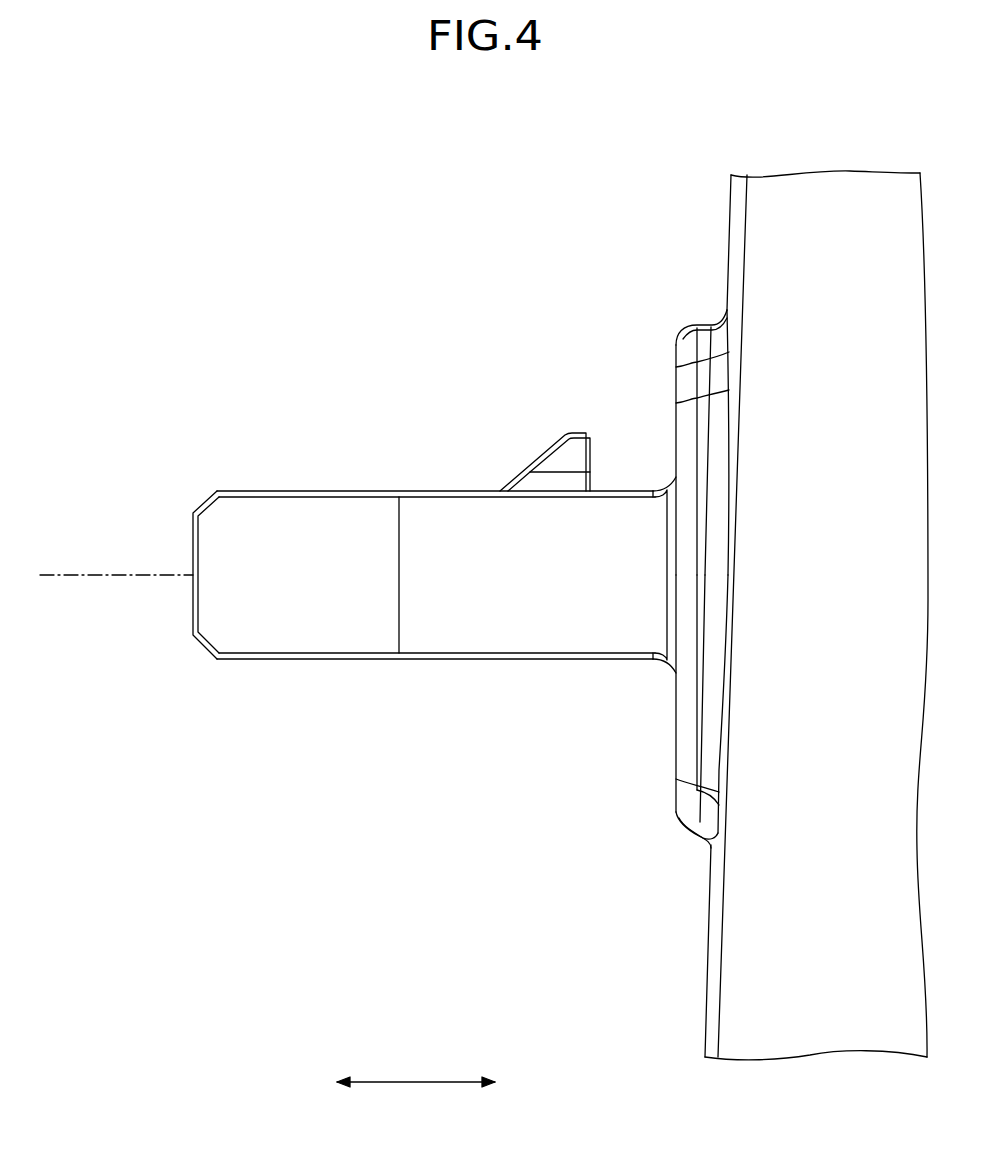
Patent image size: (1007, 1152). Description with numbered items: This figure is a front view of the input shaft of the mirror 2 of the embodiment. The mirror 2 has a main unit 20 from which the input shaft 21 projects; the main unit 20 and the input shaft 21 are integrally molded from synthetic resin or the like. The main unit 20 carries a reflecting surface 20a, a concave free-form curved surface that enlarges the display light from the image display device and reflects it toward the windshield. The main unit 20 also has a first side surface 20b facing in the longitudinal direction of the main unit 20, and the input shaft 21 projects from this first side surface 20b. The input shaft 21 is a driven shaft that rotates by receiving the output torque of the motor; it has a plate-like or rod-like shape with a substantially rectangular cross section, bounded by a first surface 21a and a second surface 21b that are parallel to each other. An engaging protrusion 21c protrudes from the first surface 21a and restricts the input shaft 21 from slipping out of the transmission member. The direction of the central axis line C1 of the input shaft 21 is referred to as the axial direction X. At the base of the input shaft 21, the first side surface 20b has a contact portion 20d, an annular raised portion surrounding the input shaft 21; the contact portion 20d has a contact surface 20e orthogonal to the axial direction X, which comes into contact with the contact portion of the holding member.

The mirror 2 is at (497, 241).
The main unit 20 is at (745, 173).
The reflecting surface 20a is at (830, 208).
The first side surface 20b is at (727, 233).
The contact portion 20d is at (686, 441).
The contact surface 20e is at (676, 745).
The input shaft 21 is at (277, 538).
The first surface 21a is at (358, 490).
The second surface 21b is at (293, 662).
The engaging protrusion 21c is at (557, 456).
The central axis line C1 is at (80, 575).
The axial direction X is at (416, 1070).